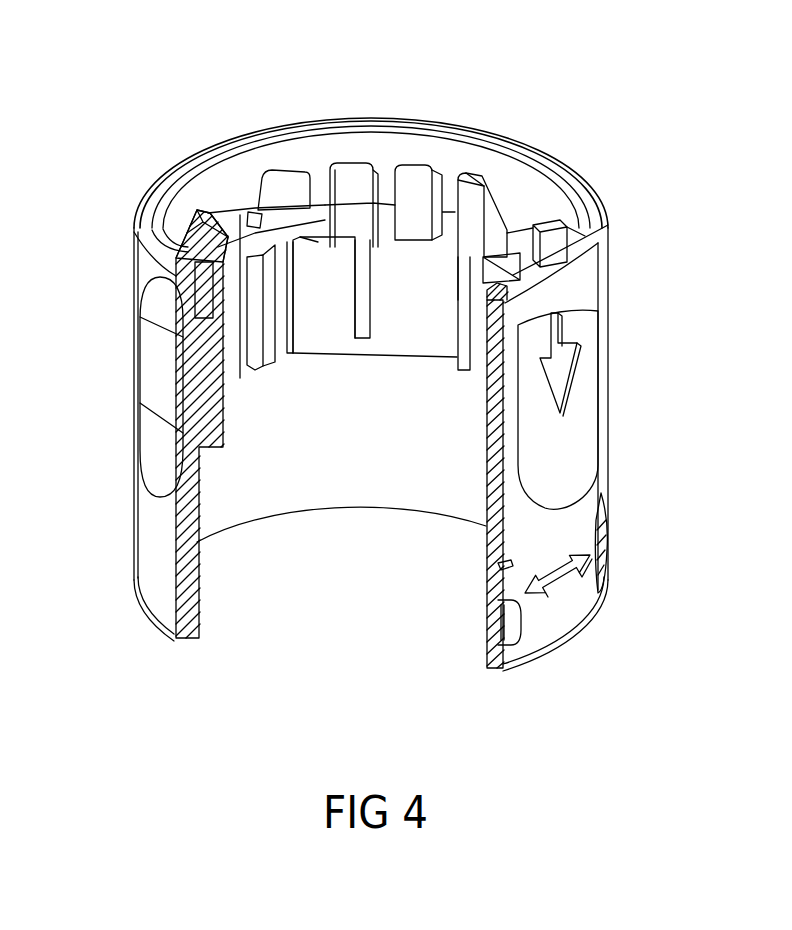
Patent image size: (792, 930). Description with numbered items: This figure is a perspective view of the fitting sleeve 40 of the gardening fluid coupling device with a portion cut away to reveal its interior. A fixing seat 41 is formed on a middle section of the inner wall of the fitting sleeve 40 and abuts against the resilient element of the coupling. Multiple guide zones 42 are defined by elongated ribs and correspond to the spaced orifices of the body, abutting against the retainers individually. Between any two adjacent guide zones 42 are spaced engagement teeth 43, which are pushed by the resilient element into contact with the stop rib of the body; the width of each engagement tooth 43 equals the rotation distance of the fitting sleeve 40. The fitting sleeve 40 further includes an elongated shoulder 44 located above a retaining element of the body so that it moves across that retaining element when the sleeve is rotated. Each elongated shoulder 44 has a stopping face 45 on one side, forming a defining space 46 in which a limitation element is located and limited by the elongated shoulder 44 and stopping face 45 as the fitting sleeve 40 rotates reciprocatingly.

The fitting sleeve 40 is at (617, 420).
The fixing seat 41 is at (386, 350).
The guide zone 42 is at (240, 227).
The spaced engagement tooth 43 is at (345, 165).
The elongated shoulder 44 is at (355, 292).
The stopping face 45 is at (435, 167).
The defining space 46 is at (427, 312).